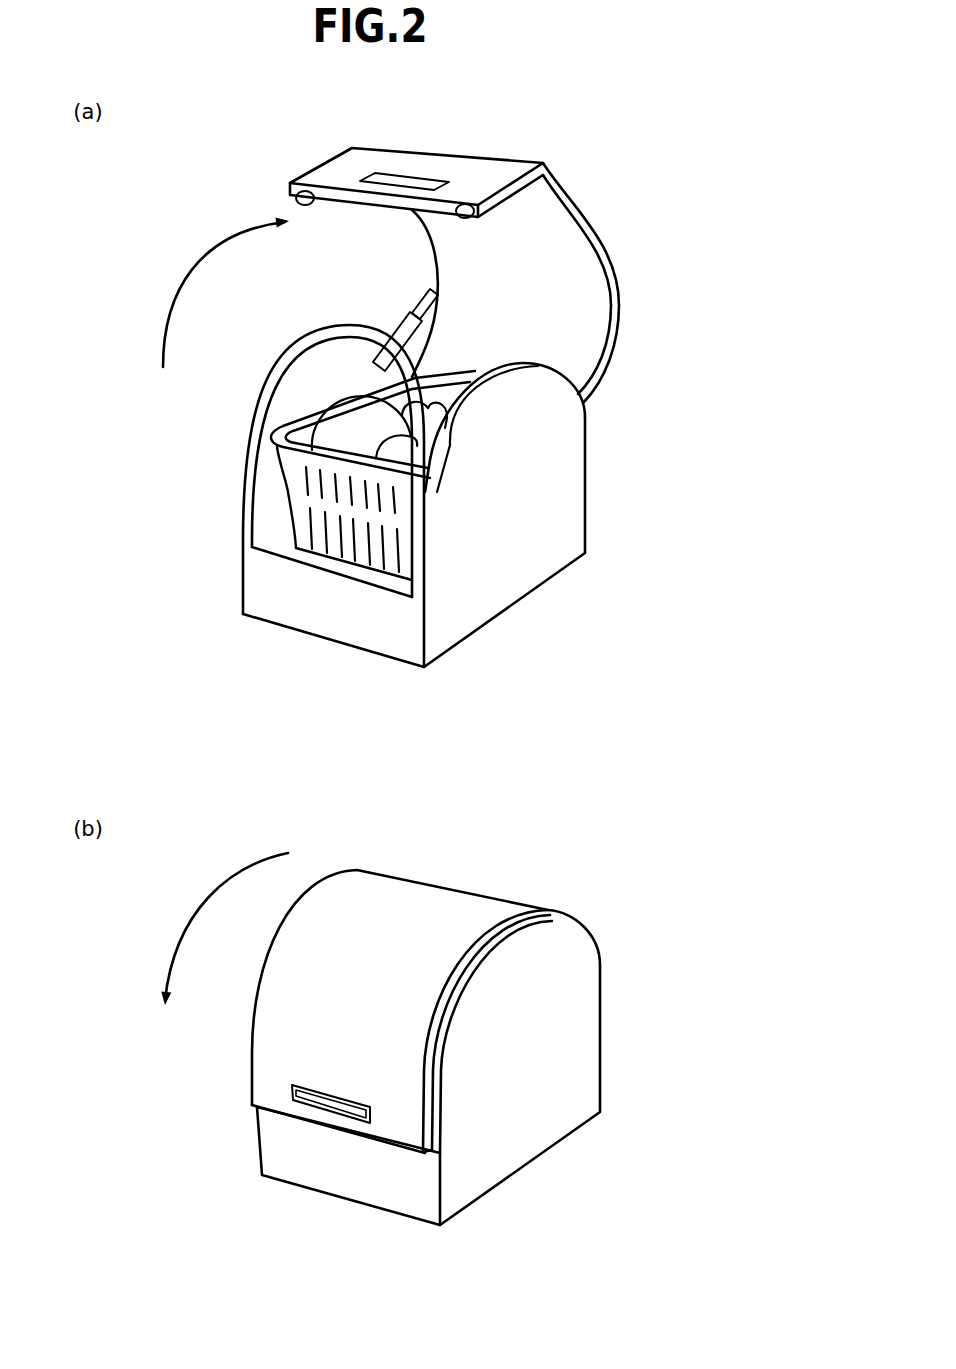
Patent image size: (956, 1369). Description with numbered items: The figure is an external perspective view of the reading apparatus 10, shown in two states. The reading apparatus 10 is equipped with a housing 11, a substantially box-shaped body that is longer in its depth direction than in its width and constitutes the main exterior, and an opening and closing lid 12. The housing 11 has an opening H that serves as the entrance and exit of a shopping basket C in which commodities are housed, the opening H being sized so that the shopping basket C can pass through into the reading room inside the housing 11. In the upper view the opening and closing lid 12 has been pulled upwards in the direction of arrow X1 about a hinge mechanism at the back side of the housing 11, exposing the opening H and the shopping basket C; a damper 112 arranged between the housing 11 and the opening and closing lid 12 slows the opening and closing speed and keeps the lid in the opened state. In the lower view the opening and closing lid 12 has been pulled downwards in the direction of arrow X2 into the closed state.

The reading apparatus 10 is at (618, 169).
The housing 11 is at (517, 584).
The opening and closing lid 12 is at (466, 172).
The damper 112 is at (422, 304).
The shopping basket C is at (332, 535).
The opening H is at (293, 376).
The arrow X1 is at (226, 292).
The arrow X2 is at (224, 929).